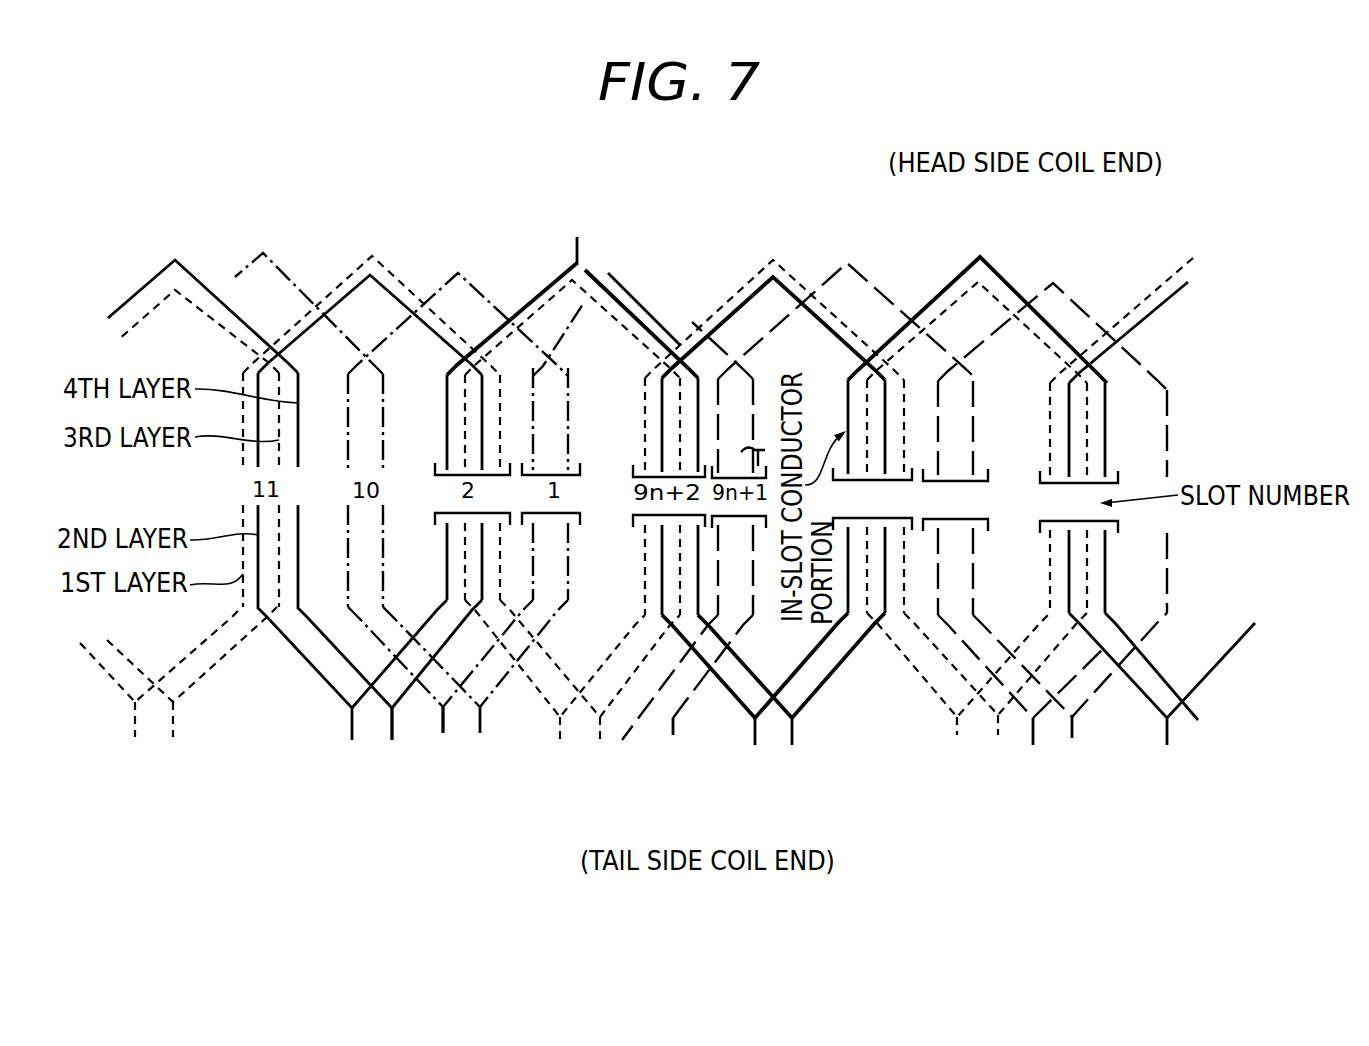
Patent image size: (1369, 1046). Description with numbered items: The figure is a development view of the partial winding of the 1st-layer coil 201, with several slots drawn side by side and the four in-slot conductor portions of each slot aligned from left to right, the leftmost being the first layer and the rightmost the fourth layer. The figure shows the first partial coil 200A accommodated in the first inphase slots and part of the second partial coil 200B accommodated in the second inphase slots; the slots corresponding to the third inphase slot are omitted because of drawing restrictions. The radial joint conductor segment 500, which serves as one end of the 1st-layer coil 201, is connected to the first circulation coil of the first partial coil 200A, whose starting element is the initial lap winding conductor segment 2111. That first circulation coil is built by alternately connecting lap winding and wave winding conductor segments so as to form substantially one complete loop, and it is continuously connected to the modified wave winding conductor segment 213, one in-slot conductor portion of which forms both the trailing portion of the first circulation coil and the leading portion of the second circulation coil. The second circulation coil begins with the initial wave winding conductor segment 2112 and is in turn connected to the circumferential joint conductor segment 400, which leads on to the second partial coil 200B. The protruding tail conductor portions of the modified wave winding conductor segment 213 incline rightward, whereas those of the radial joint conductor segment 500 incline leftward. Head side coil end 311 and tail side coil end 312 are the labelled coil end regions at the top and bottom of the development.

The circumferential joint conductor segment 400 is at (566, 326).
The radial joint conductor segment 500 is at (580, 248).
The modified wave winding conductor segment 213 is at (639, 322).
The initial wave winding conductor segment 2112 is at (801, 278).
The head side coil end 311 is at (903, 286).
The second partial coil 200B is at (568, 558).
The first partial coil 200A is at (293, 650).
The initial lap winding conductor segment 2111 is at (330, 690).
The 1st-layer coil 201 is at (410, 762).
The tail side coil end 312 is at (624, 748).